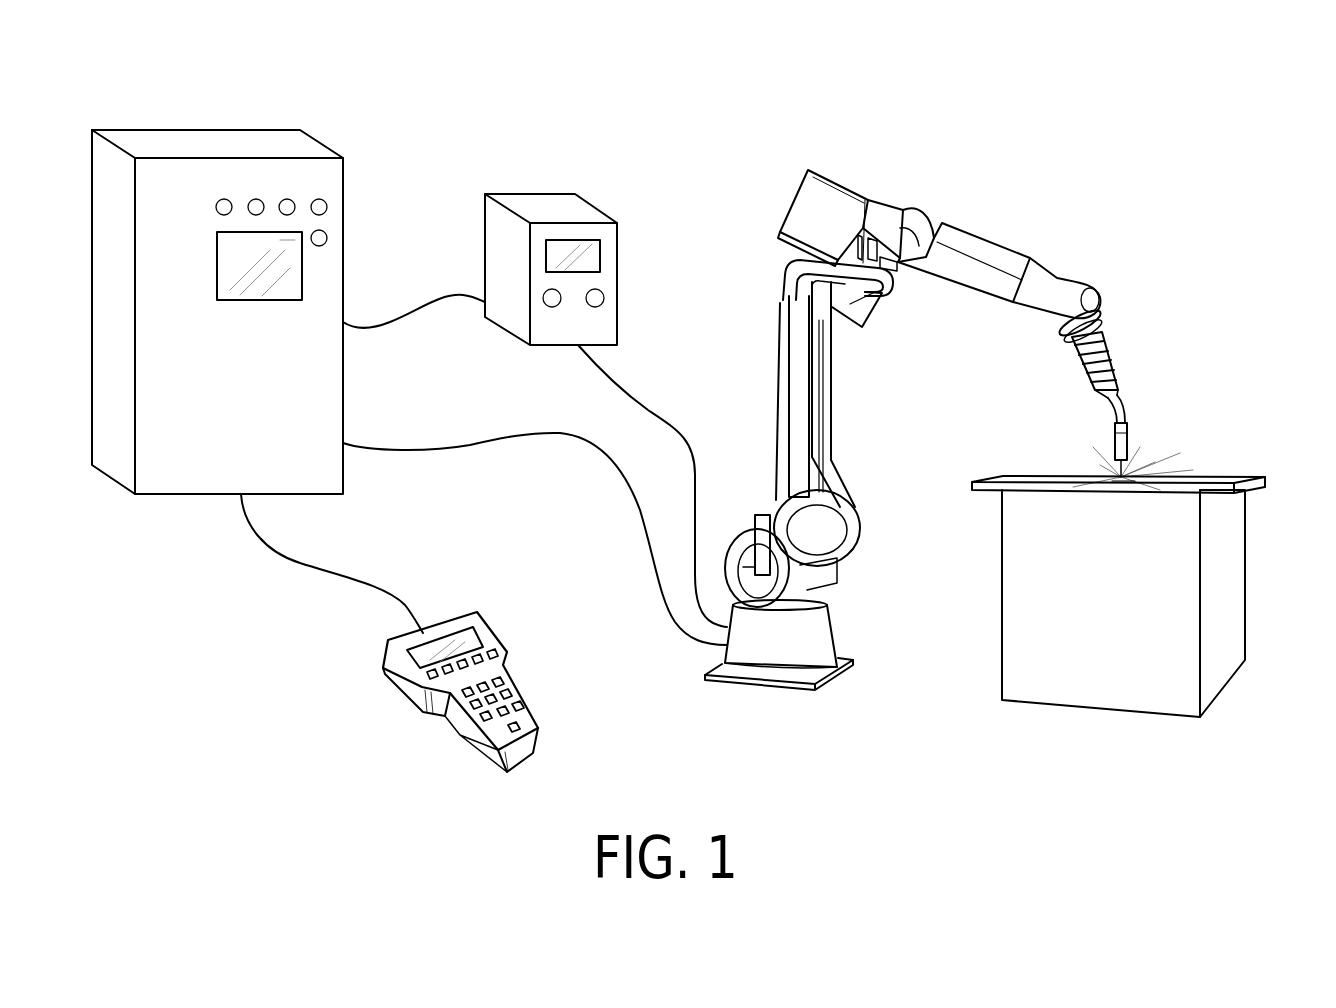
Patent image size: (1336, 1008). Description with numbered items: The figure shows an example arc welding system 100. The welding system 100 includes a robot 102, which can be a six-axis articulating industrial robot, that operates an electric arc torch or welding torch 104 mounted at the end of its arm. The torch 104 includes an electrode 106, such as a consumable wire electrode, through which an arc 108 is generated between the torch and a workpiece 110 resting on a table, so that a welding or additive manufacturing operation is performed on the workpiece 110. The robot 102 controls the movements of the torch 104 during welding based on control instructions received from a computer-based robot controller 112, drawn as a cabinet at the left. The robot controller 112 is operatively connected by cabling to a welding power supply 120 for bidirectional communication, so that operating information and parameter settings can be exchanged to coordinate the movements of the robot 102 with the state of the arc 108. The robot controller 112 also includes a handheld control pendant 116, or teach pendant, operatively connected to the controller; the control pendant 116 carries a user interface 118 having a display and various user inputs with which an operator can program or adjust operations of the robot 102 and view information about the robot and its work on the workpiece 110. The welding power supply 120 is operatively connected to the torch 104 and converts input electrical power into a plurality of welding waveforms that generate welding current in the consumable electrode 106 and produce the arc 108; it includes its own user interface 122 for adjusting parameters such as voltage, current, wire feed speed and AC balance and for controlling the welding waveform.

The arc welding system 100 is at (1190, 118).
The robot 102 is at (973, 230).
The welding torch 104 is at (1117, 362).
The electrode 106 is at (1113, 467).
The arc 108 is at (1125, 474).
The workpiece 110 is at (1233, 480).
The robot controller 112 is at (204, 129).
The control pendant 116 is at (500, 630).
The user interface 118 is at (458, 627).
The welding power supply 120 is at (542, 193).
The user interface 122 is at (611, 247).